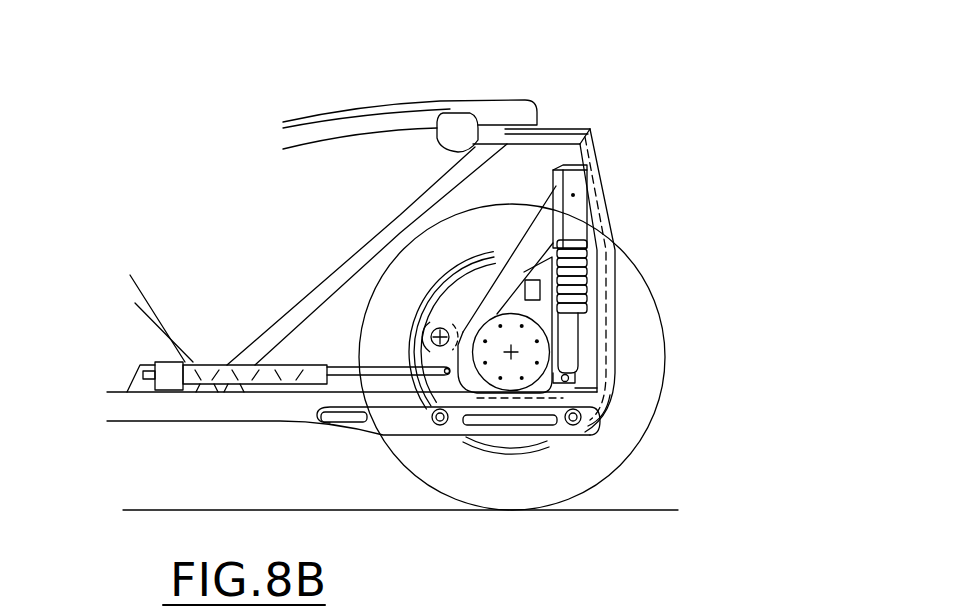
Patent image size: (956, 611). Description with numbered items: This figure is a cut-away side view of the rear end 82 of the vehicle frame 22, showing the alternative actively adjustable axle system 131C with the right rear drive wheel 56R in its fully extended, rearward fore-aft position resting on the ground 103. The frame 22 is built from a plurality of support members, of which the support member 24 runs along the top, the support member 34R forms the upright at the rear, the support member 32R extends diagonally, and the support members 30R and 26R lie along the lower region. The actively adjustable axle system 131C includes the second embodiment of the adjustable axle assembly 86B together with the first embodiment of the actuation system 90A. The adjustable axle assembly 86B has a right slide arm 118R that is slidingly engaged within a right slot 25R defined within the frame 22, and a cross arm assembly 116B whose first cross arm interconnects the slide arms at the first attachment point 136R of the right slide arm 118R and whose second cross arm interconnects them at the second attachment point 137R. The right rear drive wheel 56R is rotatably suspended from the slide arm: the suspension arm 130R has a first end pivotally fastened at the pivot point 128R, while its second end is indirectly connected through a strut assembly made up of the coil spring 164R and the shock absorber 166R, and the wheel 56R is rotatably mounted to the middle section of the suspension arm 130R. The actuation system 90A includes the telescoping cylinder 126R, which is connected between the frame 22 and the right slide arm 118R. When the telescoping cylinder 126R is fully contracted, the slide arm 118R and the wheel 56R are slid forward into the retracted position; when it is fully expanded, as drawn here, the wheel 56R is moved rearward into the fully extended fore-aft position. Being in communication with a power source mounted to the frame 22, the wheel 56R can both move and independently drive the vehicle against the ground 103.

The frame 22 is at (356, 98).
The support member 24 is at (312, 135).
The actively adjustable axle system 131C is at (640, 60).
The adjustable axle assembly 86B is at (230, 167).
The actuation system 90A is at (190, 260).
The rear end 82 is at (662, 178).
The support member 34R is at (590, 143).
The cross arm assembly 116B is at (613, 432).
The support member 32R is at (343, 272).
The right slide arm 118R is at (537, 208).
The suspension arm 130R is at (557, 396).
The pivot point 128R is at (437, 327).
The right coil spring 164R is at (587, 263).
The right shock absorber 166R is at (567, 343).
The support member 26R is at (258, 405).
The telescoping cylinder 126R is at (213, 360).
The support member 30R is at (148, 303).
The right slot 25R is at (307, 428).
The first attachment point 136R is at (417, 445).
The second attachment point 137R is at (592, 435).
The right rear drive wheel 56R is at (632, 408).
The ground 103 is at (150, 510).